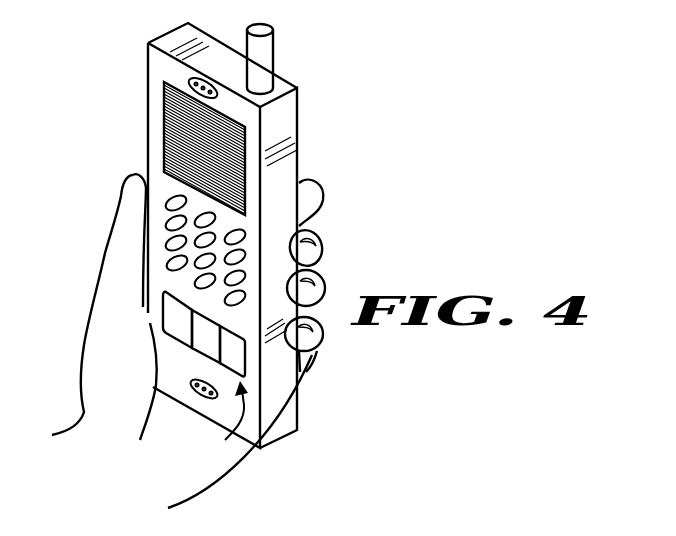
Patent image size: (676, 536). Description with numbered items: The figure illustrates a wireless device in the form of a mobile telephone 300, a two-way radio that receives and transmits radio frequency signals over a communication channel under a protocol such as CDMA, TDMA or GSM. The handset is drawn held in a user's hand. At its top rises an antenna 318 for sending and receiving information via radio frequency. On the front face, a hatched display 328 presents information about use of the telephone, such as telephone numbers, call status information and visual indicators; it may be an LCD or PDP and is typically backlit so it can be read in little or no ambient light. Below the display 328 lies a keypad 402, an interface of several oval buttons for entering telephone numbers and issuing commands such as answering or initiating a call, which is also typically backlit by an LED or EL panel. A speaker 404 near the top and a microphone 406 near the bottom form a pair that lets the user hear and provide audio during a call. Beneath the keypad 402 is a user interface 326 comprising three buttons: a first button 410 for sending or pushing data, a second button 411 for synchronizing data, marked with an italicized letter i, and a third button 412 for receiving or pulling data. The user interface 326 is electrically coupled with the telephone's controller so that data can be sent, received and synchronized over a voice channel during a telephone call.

The mobile telephone wireless device 300 is at (297, 162).
The antenna 318 is at (275, 60).
The display 328 is at (188, 136).
The keypad 402 is at (167, 197).
The speaker 404 is at (212, 80).
The microphone 406 is at (190, 394).
The first button 410 is at (166, 313).
The second button 411 is at (200, 352).
The third button 412 is at (243, 358).
The user interface 326 is at (222, 427).